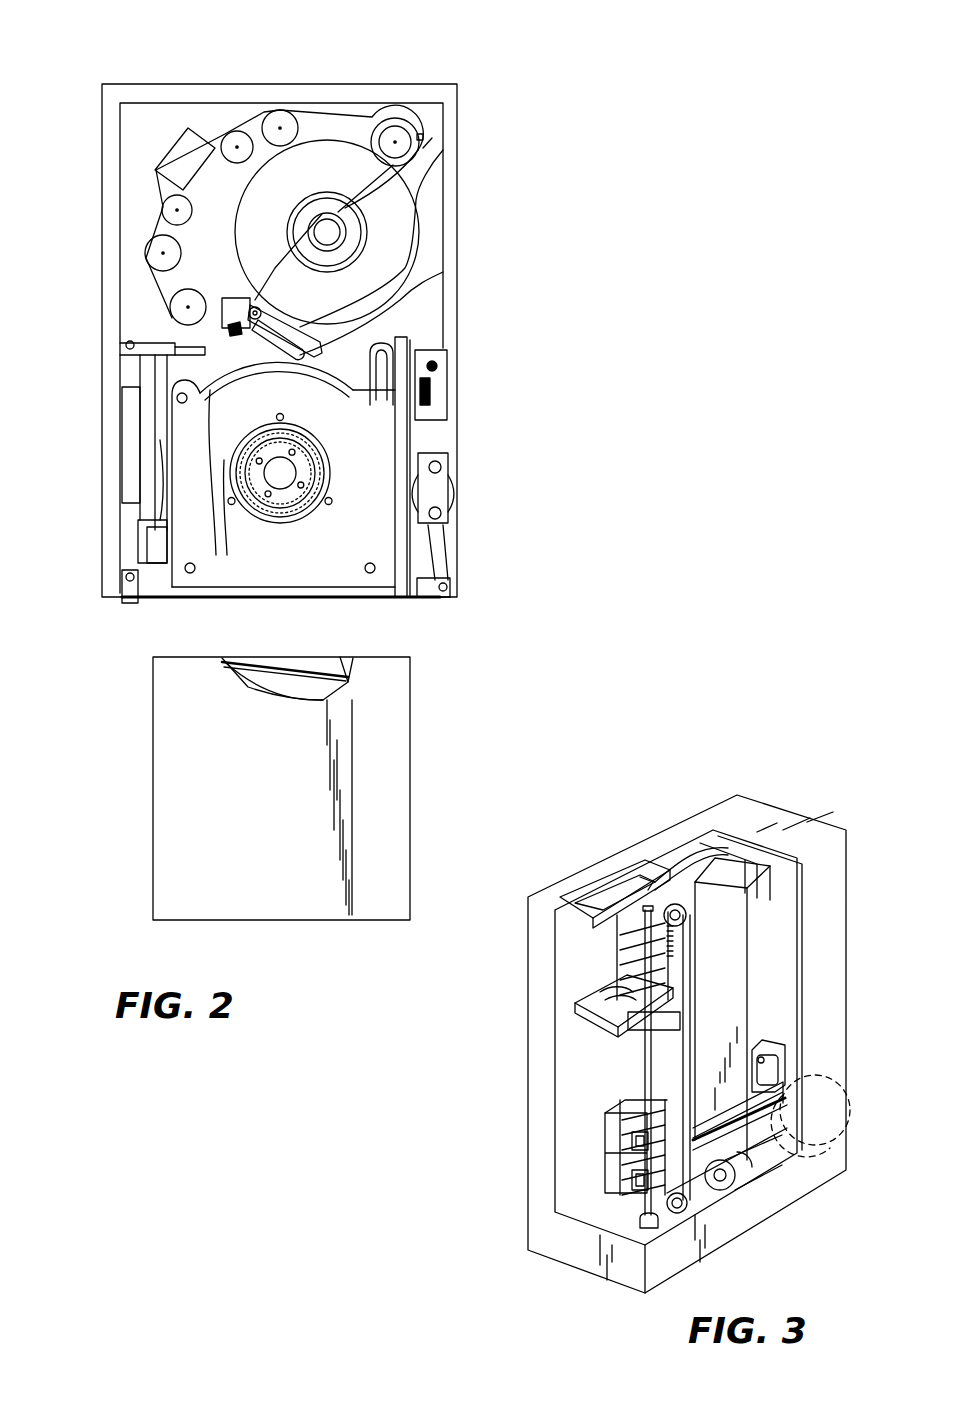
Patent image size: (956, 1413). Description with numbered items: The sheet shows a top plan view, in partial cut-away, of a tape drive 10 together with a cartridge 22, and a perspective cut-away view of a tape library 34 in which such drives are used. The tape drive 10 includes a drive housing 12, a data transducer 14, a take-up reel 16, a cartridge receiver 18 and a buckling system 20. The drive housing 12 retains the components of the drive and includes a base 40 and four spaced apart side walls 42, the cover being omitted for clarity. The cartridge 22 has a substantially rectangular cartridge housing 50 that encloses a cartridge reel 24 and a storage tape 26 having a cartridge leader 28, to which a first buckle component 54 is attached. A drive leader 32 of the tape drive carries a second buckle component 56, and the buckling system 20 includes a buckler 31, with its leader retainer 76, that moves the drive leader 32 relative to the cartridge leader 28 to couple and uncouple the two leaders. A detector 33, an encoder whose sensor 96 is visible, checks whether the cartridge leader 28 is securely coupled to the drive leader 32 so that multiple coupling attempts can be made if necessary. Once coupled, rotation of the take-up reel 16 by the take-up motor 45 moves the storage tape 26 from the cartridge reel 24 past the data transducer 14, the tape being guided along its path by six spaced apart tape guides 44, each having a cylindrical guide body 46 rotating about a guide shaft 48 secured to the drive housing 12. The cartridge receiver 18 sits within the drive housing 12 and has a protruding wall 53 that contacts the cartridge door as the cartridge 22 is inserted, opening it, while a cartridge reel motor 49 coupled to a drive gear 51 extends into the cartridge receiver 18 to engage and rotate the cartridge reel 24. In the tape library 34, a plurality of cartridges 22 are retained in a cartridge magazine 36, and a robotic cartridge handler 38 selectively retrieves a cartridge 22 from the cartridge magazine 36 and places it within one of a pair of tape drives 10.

In FIG. 2, the tape drive 10 is at (505, 86).
In FIG. 3, the tape drive 10 is at (710, 1147).
In FIG. 2, the drive housing 12 is at (468, 372).
In FIG. 2, the data transducer 14 is at (173, 157).
In FIG. 2, the take-up reel 16 is at (320, 233).
In FIG. 2, the cartridge receiver 18 is at (385, 580).
In FIG. 2, the buckling system 20 is at (522, 60).
In FIG. 2, the cartridge 22 is at (428, 748).
In FIG. 3, the cartridge 22 is at (617, 943).
In FIG. 2, the cartridge reel 24 is at (258, 683).
In FIG. 2, the storage tape 26 is at (345, 655).
In FIG. 2, the cartridge leader 28 is at (300, 656).
In FIG. 2, the buckler 31 is at (432, 138).
In FIG. 2, the drive leader 32 is at (300, 385).
In FIG. 2, the detector 33 is at (401, 128).
In FIG. 3, the tape library 34 is at (568, 1253).
In FIG. 3, the cartridge magazine 36 is at (732, 975).
In FIG. 3, the robotic cartridge handler 38 is at (587, 1016).
In FIG. 2, the base 40 is at (145, 115).
In FIG. 2, the side walls 42 is at (305, 90).
In FIG. 2, the tape guides 44 is at (150, 237).
In FIG. 2, the take-up motor 45 is at (327, 232).
In FIG. 2, the guide body 46 is at (222, 133).
In FIG. 2, the guide shaft 48 is at (278, 112).
In FIG. 2, the cartridge reel motor 49 is at (287, 470).
In FIG. 2, the cartridge housing 50 is at (410, 773).
In FIG. 2, the drive gear 51 is at (302, 505).
In FIG. 2, the protruding wall 53 is at (148, 510).
In FIG. 2, the first buckle component 54 is at (325, 650).
In FIG. 2, the second buckle component 56 is at (317, 347).
In FIG. 2, the leader retainer 76 is at (265, 318).
In FIG. 2, the sensor 96 is at (423, 133).